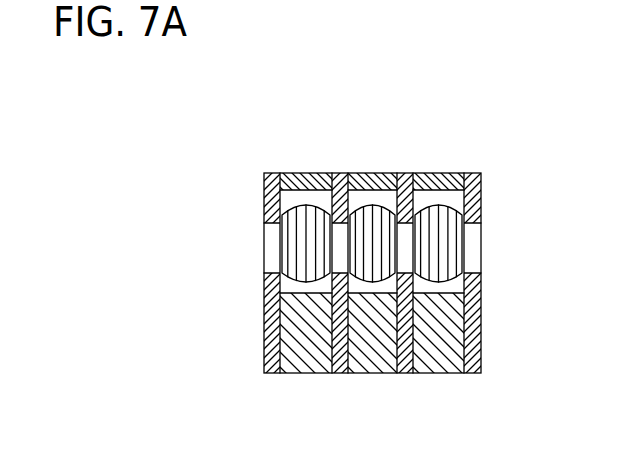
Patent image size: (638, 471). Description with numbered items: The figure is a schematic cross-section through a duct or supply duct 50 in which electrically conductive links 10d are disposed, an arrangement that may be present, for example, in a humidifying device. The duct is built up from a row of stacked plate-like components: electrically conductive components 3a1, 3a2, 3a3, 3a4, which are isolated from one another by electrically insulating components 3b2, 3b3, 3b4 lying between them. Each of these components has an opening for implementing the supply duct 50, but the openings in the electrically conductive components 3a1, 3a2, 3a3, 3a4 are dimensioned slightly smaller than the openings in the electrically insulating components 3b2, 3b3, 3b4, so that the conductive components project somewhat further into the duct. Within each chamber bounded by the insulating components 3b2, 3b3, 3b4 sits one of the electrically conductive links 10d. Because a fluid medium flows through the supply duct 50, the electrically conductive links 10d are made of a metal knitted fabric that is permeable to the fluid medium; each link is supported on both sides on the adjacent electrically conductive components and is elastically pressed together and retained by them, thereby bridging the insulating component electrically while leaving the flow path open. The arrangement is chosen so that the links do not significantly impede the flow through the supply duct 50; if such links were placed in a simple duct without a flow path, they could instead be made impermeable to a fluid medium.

The electrically conductive component 3a1 is at (270, 173).
The electrically conductive component 3a2 is at (340, 173).
The electrically conductive component 3a3 is at (407, 173).
The electrically conductive component 3a4 is at (475, 173).
The electrically insulating component 3b2 is at (310, 173).
The electrically insulating component 3b3 is at (378, 173).
The electrically insulating component 3b4 is at (447, 173).
The electrically conductive link 10d is at (367, 257).
The supply duct 50 is at (472, 250).